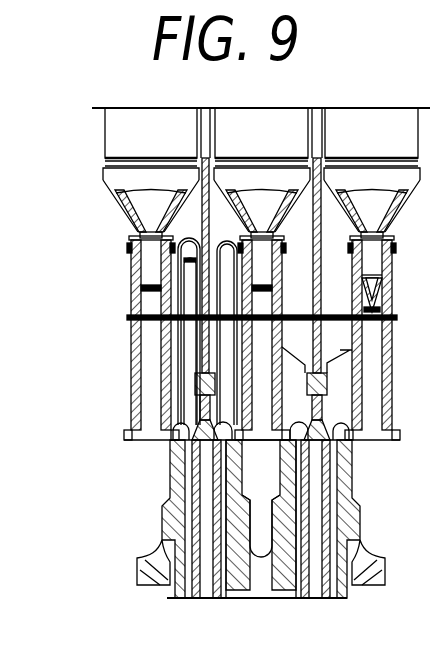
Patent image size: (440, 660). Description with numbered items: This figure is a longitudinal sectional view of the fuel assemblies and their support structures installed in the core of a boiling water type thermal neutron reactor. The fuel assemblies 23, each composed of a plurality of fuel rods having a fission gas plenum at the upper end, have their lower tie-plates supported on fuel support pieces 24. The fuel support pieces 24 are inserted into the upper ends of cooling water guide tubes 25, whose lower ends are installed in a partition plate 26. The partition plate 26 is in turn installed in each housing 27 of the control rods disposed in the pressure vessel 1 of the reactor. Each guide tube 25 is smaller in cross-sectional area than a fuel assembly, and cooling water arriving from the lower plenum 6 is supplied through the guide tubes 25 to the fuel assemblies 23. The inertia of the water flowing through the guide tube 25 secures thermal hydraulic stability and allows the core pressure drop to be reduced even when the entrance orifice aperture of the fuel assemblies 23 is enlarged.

The pressure vessel 1 is at (374, 558).
The lower plenum 6 is at (360, 355).
The fuel assemblies 23 is at (110, 127).
The fuel support pieces 24 is at (129, 223).
The cooling water guide tubes 25 is at (125, 434).
The partition plate 26 is at (124, 440).
The housing of control rods 27 is at (160, 529).